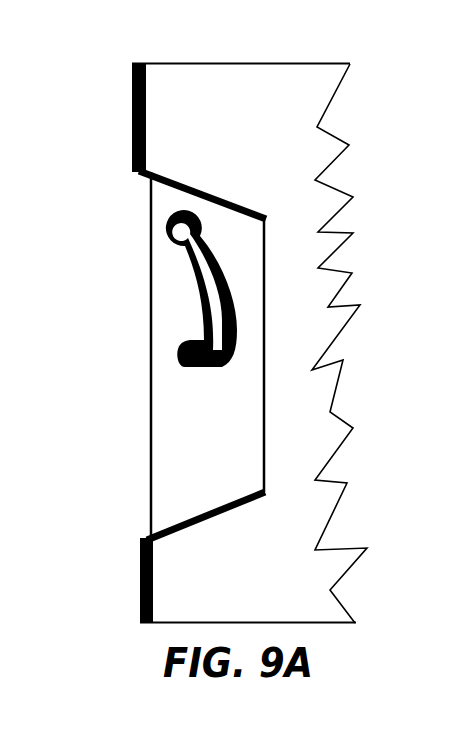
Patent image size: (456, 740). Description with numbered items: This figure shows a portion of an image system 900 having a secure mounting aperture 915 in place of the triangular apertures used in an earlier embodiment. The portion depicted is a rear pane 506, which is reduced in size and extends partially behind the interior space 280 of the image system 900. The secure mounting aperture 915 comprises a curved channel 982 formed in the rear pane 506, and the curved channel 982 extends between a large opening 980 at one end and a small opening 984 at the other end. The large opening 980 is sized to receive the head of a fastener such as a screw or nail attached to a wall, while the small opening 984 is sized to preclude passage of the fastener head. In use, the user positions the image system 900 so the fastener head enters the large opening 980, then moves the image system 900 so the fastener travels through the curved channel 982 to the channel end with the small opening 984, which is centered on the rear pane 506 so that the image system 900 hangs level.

The image system 900 is at (172, 44).
The interior space 280 is at (268, 167).
The rear pane 506 is at (230, 441).
The secure mounting aperture 915 is at (222, 240).
The large opening 980 is at (163, 211).
The curved channel 982 is at (186, 297).
The small opening 984 is at (163, 338).